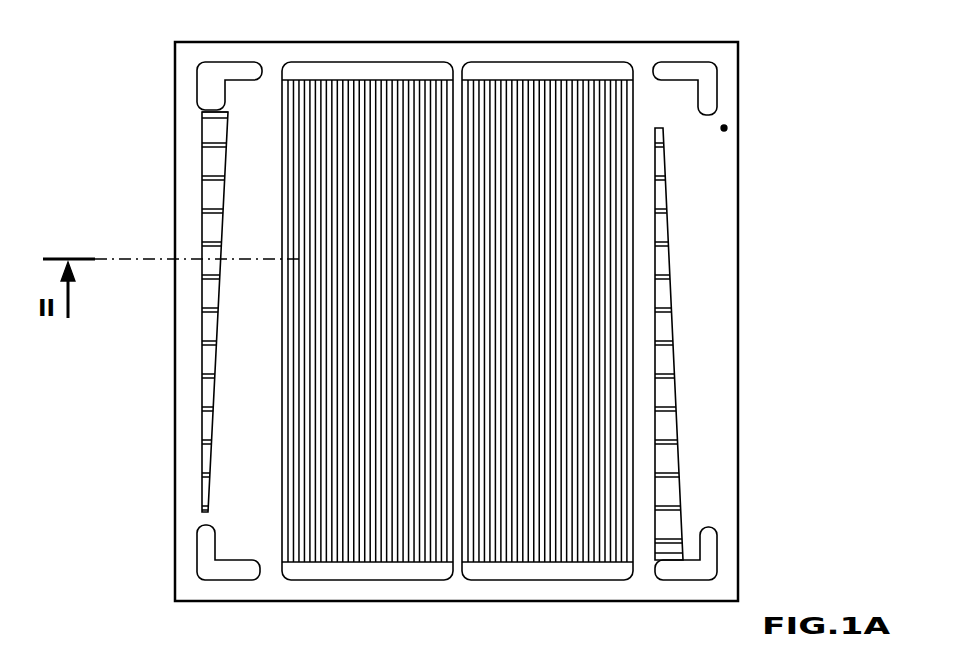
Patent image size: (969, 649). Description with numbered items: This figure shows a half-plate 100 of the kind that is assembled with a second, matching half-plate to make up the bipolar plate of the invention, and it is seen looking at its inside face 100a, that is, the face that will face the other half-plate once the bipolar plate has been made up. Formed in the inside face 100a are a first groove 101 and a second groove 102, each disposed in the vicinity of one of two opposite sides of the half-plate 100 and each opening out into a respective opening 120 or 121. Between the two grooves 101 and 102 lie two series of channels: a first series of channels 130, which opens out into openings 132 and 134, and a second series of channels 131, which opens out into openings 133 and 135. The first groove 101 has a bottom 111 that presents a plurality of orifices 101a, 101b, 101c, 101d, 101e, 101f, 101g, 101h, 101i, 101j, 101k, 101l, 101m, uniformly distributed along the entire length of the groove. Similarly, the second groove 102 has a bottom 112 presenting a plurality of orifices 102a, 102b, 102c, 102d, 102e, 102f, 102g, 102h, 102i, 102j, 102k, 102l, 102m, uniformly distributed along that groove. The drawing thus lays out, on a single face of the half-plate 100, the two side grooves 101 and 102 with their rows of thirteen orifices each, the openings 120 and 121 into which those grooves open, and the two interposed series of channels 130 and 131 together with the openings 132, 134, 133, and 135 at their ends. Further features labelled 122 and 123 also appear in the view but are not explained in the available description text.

The half-plate 100 is at (135, 68).
The inside face 100a is at (724, 128).
The first groove 101 is at (222, 186).
The orifice 101a is at (202, 112).
The orifice 101b is at (202, 145).
The orifice 101c is at (202, 178).
The orifice 101d is at (202, 211).
The orifice 101e is at (202, 244).
The orifice 101f is at (202, 277).
The orifice 101g is at (202, 310).
The orifice 101h is at (202, 343).
The orifice 101i is at (202, 376).
The orifice 101j is at (202, 409).
The orifice 101k is at (202, 442).
The orifice 101l is at (202, 475).
The orifice 101m is at (202, 510).
The second groove 102 is at (658, 452).
The orifice 102a is at (664, 145).
The orifice 102b is at (665, 178).
The orifice 102c is at (667, 211).
The orifice 102d is at (668, 244).
The orifice 102e is at (670, 277).
The orifice 102f is at (671, 310).
The orifice 102g is at (673, 343).
The orifice 102h is at (674, 376).
The orifice 102i is at (676, 409).
The orifice 102j is at (678, 442).
The orifice 102k is at (679, 475).
The orifice 102l is at (681, 508).
The orifice 102m is at (682, 541).
The bottom of the first groove 111 is at (226, 112).
The bottom of the second groove 112 is at (664, 572).
The opening 120 is at (212, 62).
The opening 121 is at (704, 580).
The bond pad 122 is at (680, 62).
The bond pad 123 is at (236, 580).
The first series of channels 130 is at (618, 80).
The second series of channels 131 is at (338, 80).
The opening 132 is at (522, 578).
The opening 133 is at (400, 578).
The opening 134 is at (460, 74).
The opening 135 is at (400, 70).